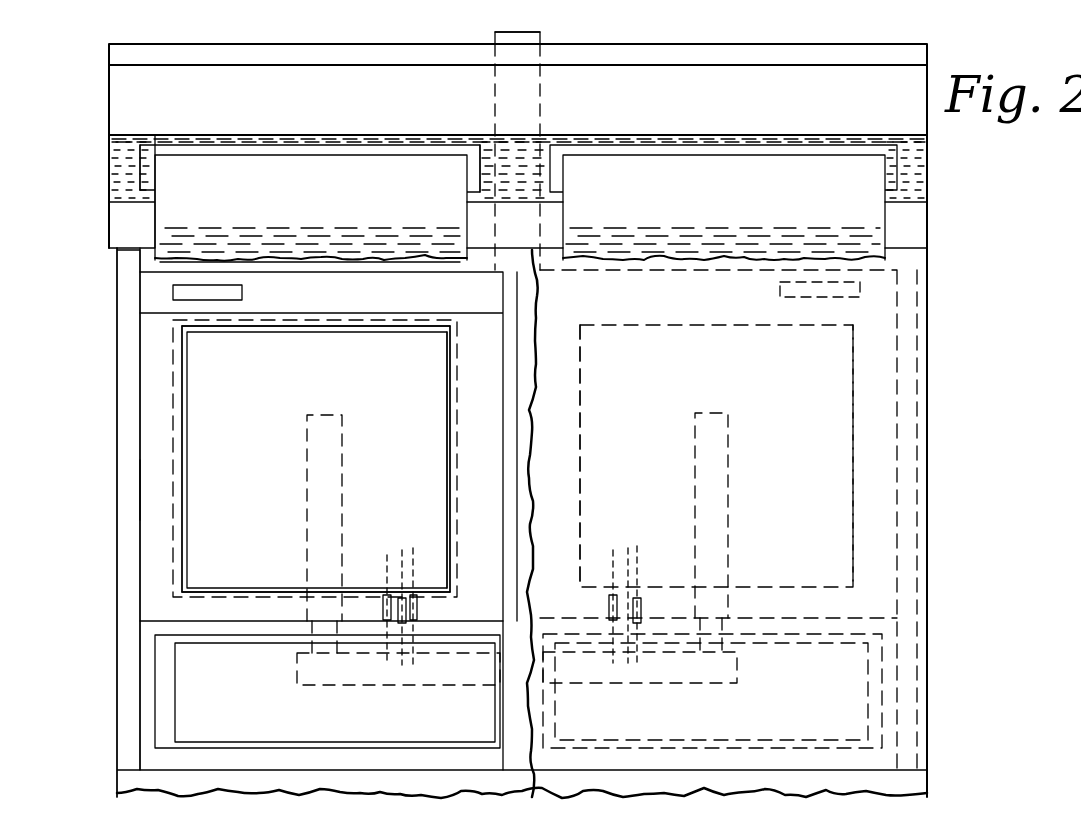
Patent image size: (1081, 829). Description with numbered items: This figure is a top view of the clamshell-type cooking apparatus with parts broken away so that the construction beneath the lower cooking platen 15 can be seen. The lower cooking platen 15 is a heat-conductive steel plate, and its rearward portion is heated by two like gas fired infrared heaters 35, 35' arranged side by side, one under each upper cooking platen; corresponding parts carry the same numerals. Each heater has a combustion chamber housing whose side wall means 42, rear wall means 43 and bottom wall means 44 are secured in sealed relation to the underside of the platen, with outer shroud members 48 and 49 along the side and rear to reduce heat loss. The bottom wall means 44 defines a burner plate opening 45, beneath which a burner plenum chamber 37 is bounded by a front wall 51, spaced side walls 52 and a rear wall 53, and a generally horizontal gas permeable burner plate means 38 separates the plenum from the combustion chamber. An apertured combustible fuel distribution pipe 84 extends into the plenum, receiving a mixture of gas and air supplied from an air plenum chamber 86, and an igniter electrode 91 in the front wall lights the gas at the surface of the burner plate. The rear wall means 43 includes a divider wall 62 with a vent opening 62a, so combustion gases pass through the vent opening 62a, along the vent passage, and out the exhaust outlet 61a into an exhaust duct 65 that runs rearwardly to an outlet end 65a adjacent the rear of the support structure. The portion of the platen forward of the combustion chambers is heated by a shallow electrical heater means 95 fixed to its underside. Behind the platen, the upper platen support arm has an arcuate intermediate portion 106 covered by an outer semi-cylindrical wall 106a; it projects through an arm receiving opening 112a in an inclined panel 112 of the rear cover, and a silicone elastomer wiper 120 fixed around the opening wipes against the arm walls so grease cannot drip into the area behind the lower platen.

The lower cooking platen 15 is at (690, 388).
The gas fired infrared heater 35 is at (253, 458).
The gas fired infrared heater 35' is at (788, 456).
The burner plenum chamber 37 is at (142, 478).
The gas permeable burner plate means 38 is at (262, 486).
The side wall means 42 is at (142, 372).
The rear wall means 43 is at (320, 268).
The bottom wall means 44 is at (470, 398).
The burner plate opening 45 is at (450, 347).
The outer shroud member 48 is at (116, 348).
The outer shroud member 49 is at (492, 210).
The front wall 51 is at (256, 585).
The side walls 52 is at (185, 400).
The rear wall 53 is at (222, 356).
The exhaust outlet 61a is at (496, 272).
The divider wall 62 is at (283, 285).
The vent opening 62a is at (205, 283).
The exhaust duct 65 is at (542, 112).
The outlet end 65a is at (540, 34).
The combustible fuel distribution pipe 84 is at (329, 412).
The air plenum chamber 86 is at (655, 690).
The igniter electrode 91 is at (388, 552).
The electrical heater means 95 is at (262, 700).
The arcuate intermediate portion 106 is at (155, 218).
The outer semi-cylindrical wall 106a is at (318, 165).
The panel 112 is at (125, 172).
The arm receiving opening 112a is at (150, 165).
The wiper 120 is at (240, 145).